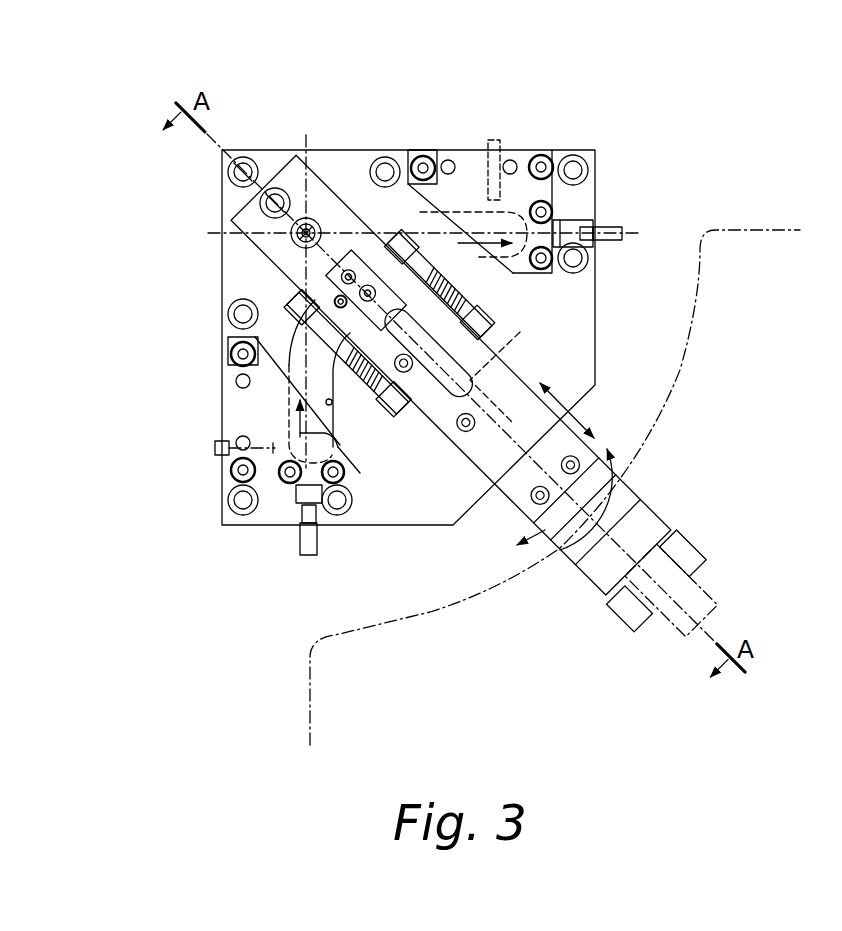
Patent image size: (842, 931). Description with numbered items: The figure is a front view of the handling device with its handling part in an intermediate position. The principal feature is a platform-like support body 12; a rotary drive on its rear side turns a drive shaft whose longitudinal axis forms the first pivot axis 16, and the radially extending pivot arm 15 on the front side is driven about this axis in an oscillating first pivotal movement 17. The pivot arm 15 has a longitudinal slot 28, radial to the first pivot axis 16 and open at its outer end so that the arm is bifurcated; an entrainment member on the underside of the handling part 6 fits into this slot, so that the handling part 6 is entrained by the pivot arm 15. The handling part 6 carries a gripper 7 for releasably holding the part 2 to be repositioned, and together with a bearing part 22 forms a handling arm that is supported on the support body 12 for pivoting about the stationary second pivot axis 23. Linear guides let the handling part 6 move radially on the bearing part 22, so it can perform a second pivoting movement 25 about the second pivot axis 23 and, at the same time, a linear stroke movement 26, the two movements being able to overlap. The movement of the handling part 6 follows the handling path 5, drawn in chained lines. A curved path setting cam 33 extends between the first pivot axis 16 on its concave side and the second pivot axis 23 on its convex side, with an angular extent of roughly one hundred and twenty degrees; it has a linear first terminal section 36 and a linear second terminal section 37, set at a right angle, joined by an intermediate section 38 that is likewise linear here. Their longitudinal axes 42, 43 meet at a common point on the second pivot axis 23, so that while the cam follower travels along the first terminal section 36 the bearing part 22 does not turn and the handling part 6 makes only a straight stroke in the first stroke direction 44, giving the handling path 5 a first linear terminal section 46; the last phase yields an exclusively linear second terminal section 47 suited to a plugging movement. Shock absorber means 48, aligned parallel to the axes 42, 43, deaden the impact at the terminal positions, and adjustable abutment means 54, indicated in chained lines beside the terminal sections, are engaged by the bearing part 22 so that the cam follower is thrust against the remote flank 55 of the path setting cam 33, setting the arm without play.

The part 2 is at (665, 645).
The handling path 5 is at (432, 613).
The handling part 6 is at (530, 470).
The gripper 7 is at (620, 498).
The support body 12 is at (266, 165).
The pivot arm 15 is at (513, 342).
The first pivot axis 16 is at (500, 412).
The first pivotal movement 17 is at (436, 390).
The bearing part 22 is at (322, 200).
The second pivot axis 23 is at (306, 233).
The second pivoting movement 25 is at (560, 518).
The linear stroke movement 26 is at (572, 405).
The slot 28 is at (458, 296).
The path setting cam 33 is at (430, 222).
The first terminal section 36 is at (290, 416).
The second terminal section 37 is at (510, 222).
The intermediate section 38 is at (318, 320).
The longitudinal axis 42 is at (315, 305).
The longitudinal axis 43 is at (352, 238).
The first stroke direction 44 is at (360, 473).
The first linear terminal section 46 is at (309, 695).
The second terminal section 47 is at (760, 228).
The shock absorber means 48 is at (600, 222).
The abutment means 54 is at (493, 212).
The remote flank 55 is at (333, 405).